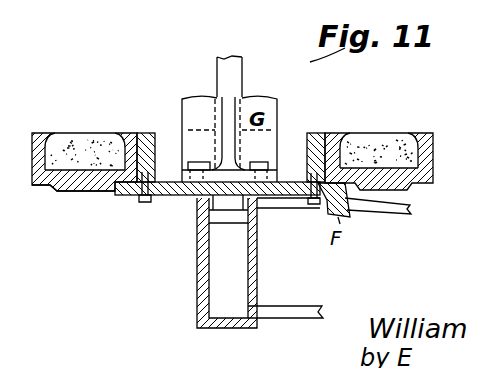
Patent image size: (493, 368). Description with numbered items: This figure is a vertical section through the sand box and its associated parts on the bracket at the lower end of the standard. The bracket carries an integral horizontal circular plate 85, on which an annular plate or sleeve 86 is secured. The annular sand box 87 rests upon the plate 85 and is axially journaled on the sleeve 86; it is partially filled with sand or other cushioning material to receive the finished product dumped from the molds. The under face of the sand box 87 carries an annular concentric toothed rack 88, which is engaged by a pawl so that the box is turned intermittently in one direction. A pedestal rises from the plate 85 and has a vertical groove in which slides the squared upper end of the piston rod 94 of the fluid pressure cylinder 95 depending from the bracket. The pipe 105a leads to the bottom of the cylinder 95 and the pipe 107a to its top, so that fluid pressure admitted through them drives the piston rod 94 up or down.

The annular sand box 87 is at (78, 133).
The annular concentric toothed rack 88 is at (75, 191).
The horizontal circular plate 85 is at (127, 195).
The annular plate or sleeve 86 is at (313, 133).
The piston rod 94 is at (233, 77).
The fluid pressure cylinder 95 is at (227, 261).
The pipe 105a is at (296, 298).
The pipe 107a is at (379, 217).